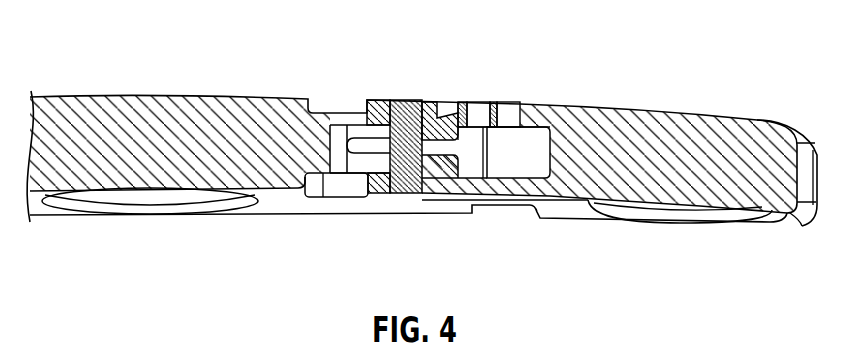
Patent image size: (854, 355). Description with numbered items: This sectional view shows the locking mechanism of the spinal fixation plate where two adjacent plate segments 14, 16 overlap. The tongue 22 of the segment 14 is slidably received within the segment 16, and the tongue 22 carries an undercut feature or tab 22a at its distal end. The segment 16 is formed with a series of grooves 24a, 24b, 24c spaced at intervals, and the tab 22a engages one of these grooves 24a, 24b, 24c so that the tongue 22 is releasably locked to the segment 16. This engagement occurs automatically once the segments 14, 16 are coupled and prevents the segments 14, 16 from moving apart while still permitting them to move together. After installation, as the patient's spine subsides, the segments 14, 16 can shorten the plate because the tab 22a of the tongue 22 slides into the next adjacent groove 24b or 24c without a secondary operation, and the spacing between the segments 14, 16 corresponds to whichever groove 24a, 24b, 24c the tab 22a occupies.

The segment 14 is at (195, 167).
The segment 16 is at (678, 167).
The tongue 22 is at (353, 128).
The tab 22a is at (443, 127).
The groove 24a is at (454, 110).
The groove 24b is at (480, 110).
The groove 24c is at (508, 110).